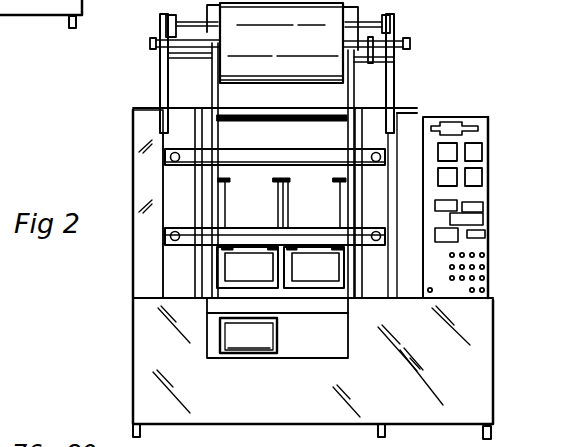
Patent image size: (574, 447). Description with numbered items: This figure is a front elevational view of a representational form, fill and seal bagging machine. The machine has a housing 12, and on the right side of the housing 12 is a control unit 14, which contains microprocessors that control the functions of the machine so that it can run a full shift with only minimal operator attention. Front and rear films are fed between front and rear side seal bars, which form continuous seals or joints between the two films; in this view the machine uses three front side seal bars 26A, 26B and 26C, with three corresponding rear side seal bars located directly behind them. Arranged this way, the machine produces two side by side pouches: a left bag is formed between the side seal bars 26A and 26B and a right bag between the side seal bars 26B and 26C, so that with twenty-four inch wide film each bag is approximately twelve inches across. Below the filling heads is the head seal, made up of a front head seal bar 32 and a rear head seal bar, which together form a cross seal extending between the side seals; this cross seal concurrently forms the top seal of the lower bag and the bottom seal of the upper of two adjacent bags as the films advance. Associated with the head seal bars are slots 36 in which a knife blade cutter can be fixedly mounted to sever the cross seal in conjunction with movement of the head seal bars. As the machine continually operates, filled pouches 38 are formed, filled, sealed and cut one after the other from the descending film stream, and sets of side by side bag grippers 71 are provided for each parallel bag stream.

The housing 12 is at (322, 395).
The control unit 14 is at (488, 145).
The front side seal bar 26A is at (222, 179).
The front side seal bar 26B is at (277, 183).
The front side seal bar 26C is at (337, 183).
The front head seal bar 32 is at (212, 244).
The slots 36 is at (222, 237).
The filled pouches 38 is at (262, 340).
The bag grippers 71 is at (246, 251).